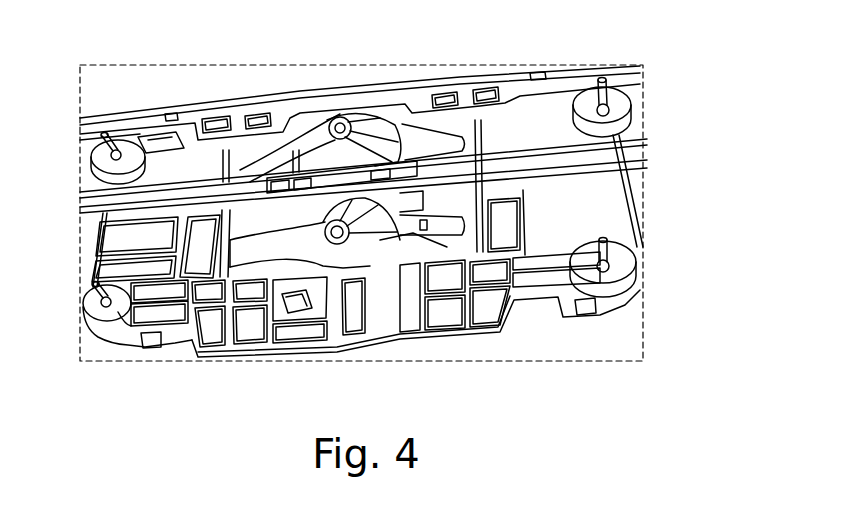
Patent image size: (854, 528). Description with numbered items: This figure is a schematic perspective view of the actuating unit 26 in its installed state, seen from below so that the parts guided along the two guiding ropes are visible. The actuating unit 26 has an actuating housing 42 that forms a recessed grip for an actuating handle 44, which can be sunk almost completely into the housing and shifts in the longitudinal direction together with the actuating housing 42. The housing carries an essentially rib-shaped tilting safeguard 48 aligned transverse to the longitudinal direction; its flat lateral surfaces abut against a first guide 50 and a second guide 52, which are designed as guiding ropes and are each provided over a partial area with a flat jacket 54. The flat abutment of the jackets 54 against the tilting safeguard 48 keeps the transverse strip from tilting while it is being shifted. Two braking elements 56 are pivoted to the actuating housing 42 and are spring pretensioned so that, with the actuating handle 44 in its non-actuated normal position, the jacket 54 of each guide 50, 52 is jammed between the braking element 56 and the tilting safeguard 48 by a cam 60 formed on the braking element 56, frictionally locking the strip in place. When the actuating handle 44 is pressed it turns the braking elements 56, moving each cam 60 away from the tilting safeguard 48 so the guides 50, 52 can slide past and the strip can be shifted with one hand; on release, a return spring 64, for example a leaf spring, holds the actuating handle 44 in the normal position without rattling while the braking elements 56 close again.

The actuating unit 26 is at (195, 168).
The actuating housing 42 is at (607, 233).
The actuating handle 44 is at (500, 95).
The tilting safeguard 48 is at (458, 205).
The first guide 50 is at (645, 168).
The second guide 52 is at (97, 228).
The flat jacket 54 is at (146, 214).
The braking element 56 is at (303, 117).
The cam 60 is at (336, 122).
The return spring 64 is at (313, 297).